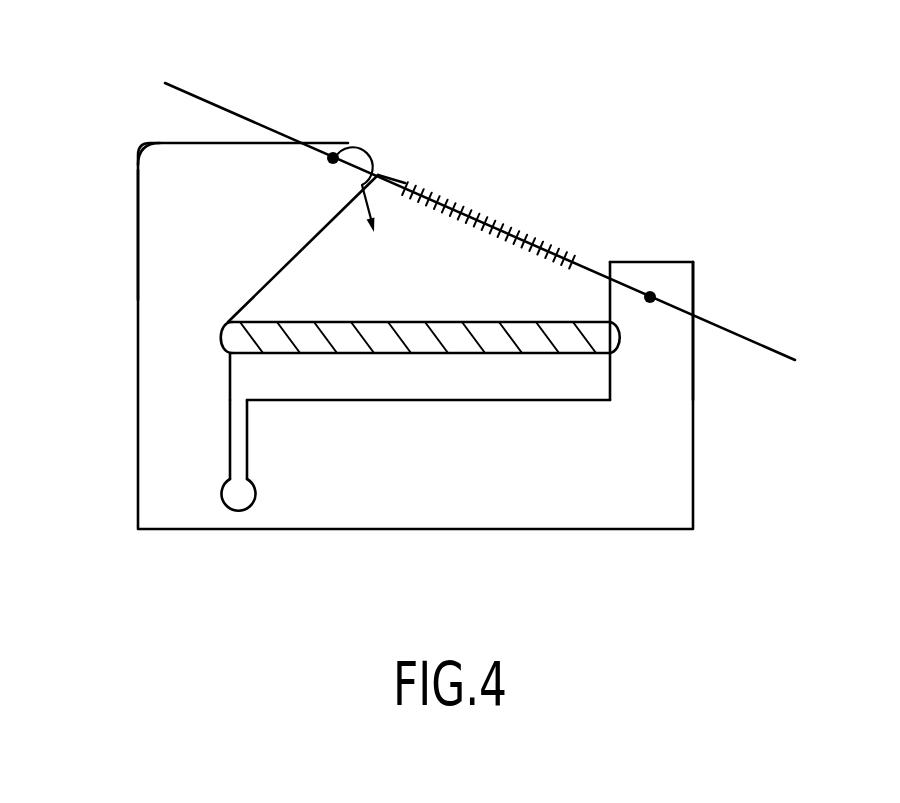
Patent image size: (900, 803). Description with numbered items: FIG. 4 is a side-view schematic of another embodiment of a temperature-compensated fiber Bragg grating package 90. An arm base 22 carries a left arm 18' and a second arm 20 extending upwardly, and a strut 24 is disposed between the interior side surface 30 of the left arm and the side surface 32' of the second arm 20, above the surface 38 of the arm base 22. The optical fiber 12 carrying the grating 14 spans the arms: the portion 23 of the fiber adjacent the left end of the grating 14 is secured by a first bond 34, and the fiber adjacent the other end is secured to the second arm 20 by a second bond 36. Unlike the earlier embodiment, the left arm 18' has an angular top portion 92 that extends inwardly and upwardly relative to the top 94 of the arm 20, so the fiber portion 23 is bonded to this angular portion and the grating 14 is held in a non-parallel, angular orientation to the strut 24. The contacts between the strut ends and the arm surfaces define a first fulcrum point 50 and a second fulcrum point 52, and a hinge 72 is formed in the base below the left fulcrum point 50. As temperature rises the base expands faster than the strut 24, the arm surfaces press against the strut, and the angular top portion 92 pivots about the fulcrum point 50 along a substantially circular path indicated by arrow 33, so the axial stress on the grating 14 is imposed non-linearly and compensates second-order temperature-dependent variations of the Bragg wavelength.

The lever arm 12 is at (770, 349).
The grating 14 is at (555, 211).
The arm 18' is at (94, 214).
The second arm 20 is at (697, 300).
The arm base 22 is at (487, 498).
The portion of the fiber 23 is at (386, 180).
The strut 24 is at (342, 322).
The side surface 30 is at (231, 376).
The side surface 32' is at (689, 349).
The arrow 33 is at (397, 174).
The first bond 34 is at (347, 143).
The second bond 36 is at (652, 295).
The surface 38 is at (518, 400).
The first fulcrum point 50 is at (224, 333).
The second fulcrum point 52 is at (617, 336).
The hinge 72 is at (212, 517).
The assembly 90 is at (598, 121).
The angular top portion 92 is at (140, 131).
The top 94 is at (630, 261).